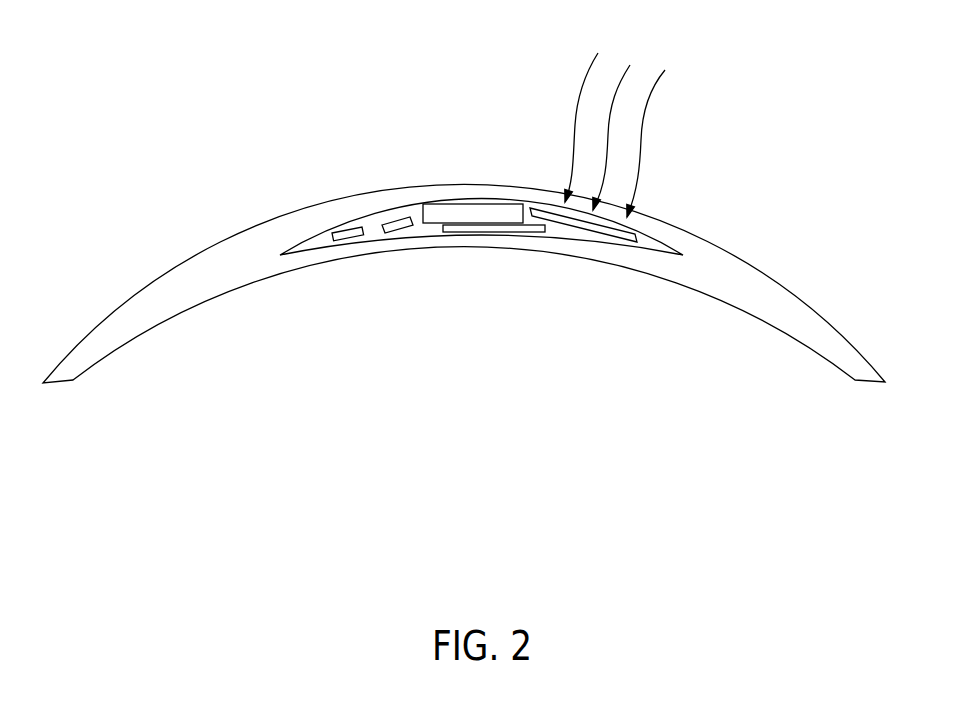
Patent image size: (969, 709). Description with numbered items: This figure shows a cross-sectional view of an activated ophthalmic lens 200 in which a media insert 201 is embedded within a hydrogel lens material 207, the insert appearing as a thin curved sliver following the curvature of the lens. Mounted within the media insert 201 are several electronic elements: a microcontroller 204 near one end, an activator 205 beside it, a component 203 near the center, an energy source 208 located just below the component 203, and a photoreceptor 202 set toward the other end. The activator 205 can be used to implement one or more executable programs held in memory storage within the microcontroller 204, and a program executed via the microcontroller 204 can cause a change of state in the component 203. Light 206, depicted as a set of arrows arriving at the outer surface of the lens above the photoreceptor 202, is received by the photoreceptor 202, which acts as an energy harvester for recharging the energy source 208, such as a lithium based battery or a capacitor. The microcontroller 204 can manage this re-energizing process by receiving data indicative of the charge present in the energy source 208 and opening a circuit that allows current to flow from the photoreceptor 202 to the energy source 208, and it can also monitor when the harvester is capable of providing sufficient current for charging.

The activated ophthalmic lens 200 is at (243, 110).
The media insert 201 is at (327, 247).
The photoreceptor 202 is at (623, 243).
The component 203 is at (463, 207).
The microcontroller 204 is at (332, 233).
The activator 205 is at (395, 233).
The light 206 is at (628, 117).
The hydrogel lens material 207 is at (737, 287).
The energy source 208 is at (507, 231).